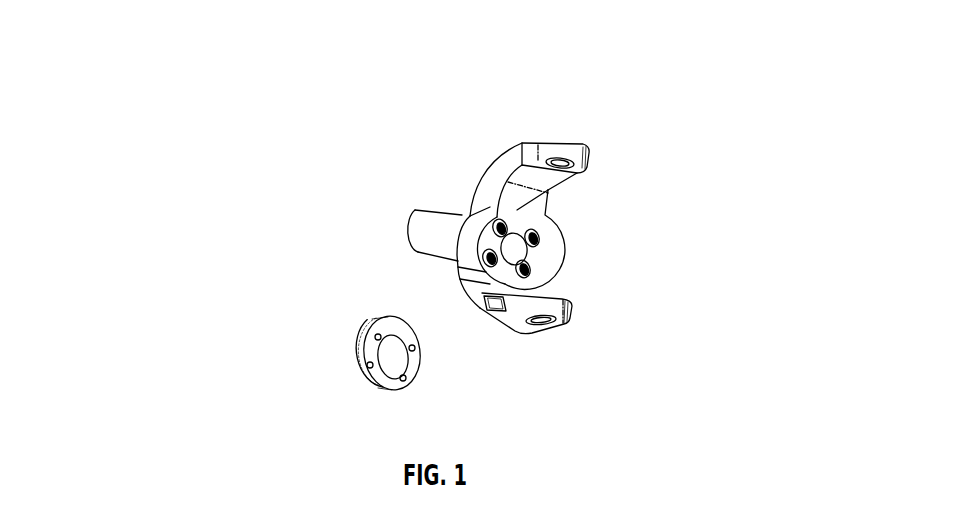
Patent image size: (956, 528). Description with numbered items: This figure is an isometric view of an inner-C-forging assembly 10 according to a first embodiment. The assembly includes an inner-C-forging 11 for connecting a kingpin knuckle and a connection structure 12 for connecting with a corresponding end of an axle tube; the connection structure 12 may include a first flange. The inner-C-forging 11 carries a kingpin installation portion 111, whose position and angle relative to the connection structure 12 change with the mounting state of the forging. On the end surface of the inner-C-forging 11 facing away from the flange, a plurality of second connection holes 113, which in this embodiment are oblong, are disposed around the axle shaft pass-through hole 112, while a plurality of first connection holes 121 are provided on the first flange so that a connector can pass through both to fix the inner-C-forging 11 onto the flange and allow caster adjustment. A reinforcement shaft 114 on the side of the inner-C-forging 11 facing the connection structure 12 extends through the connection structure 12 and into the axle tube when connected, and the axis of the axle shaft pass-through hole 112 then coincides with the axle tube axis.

The inner-C-forging assembly 10 is at (170, 48).
The inner-C-forging 11 is at (548, 190).
The kingpin installation portion 111 is at (576, 150).
The axle shaft pass-through hole 112 is at (527, 252).
The second connection holes 113 is at (526, 268).
The reinforcement shaft 114 is at (438, 222).
The connection structure 12 is at (353, 348).
The first connection holes 121 is at (375, 320).